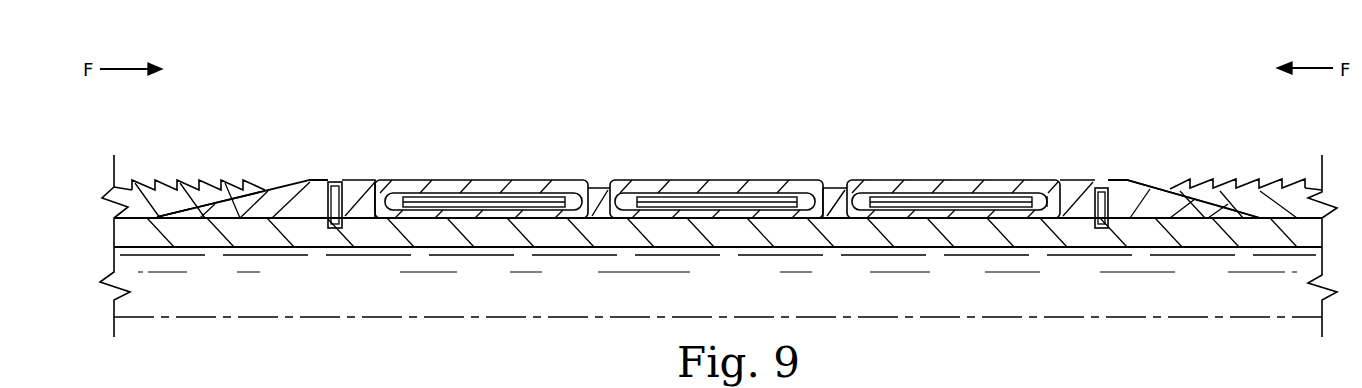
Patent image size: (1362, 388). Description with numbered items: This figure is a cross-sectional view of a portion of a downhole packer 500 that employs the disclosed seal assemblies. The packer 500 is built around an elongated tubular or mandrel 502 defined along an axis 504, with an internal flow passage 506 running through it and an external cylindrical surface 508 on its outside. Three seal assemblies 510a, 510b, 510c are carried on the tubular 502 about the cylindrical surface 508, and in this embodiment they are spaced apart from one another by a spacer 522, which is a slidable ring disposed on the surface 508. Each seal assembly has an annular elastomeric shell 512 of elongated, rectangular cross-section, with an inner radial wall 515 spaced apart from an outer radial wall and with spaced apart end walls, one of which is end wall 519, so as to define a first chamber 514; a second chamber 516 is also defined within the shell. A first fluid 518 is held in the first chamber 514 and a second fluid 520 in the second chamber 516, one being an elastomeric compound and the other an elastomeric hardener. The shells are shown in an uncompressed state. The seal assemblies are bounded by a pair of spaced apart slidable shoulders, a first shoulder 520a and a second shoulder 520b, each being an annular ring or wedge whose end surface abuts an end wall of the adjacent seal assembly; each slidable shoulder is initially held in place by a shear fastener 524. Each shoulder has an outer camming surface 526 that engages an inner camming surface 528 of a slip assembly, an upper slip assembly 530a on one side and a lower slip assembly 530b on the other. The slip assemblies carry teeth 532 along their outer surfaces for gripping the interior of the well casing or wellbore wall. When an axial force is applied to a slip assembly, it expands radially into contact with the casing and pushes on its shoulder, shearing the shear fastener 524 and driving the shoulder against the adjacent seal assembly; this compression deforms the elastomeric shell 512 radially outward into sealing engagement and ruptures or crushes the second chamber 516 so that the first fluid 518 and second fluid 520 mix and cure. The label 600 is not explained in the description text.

The downhole packer 500 is at (393, 76).
The tubular or mandrel 502 is at (382, 238).
The axis 504 is at (972, 319).
The internal flow passage 506 is at (748, 296).
The external cylindrical surface 508 is at (150, 216).
The seal assembly 510a is at (925, 188).
The seal assembly 510b is at (684, 185).
The seal assembly 510c is at (527, 185).
The elastomeric shell 512 is at (408, 186).
The first chamber 514 is at (584, 208).
The inner radial wall 515 is at (984, 212).
The second chamber 516 is at (458, 190).
The first fluid 518 is at (1080, 210).
The end wall 519 is at (843, 200).
The second fluid 520 is at (483, 210).
The first shoulder 520a is at (320, 195).
The second shoulder 520b is at (1115, 188).
The spacer 522 is at (597, 190).
The shear fastener 524 is at (343, 228).
The outer camming surface 526 is at (276, 182).
The inner camming surface 528 is at (225, 215).
The first or upper slip assembly 530a is at (132, 160).
The second or lower slip assembly 530b is at (1297, 160).
The teeth 532 is at (1225, 185).
The sheet 600 is at (717, 330).